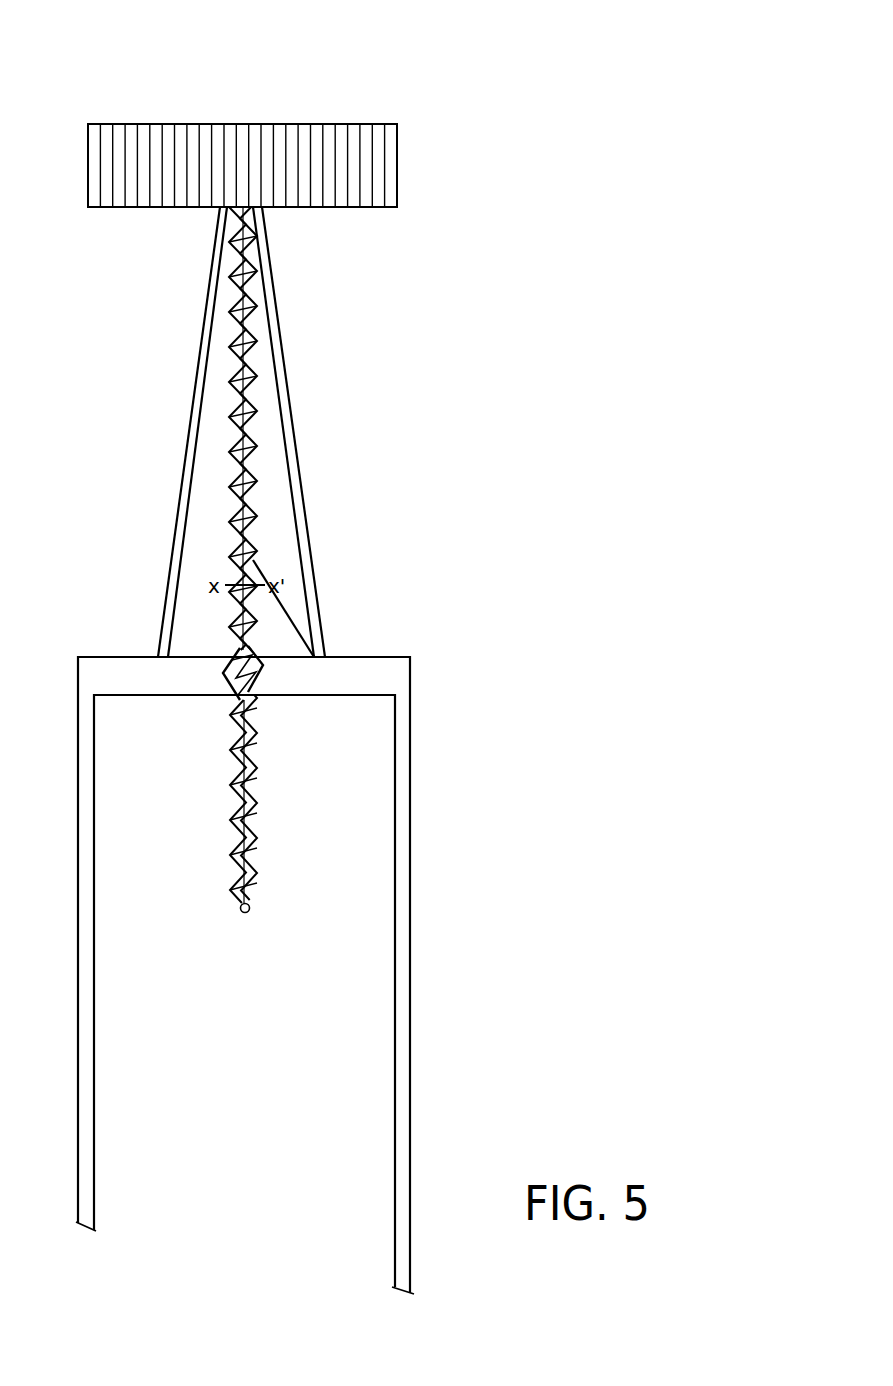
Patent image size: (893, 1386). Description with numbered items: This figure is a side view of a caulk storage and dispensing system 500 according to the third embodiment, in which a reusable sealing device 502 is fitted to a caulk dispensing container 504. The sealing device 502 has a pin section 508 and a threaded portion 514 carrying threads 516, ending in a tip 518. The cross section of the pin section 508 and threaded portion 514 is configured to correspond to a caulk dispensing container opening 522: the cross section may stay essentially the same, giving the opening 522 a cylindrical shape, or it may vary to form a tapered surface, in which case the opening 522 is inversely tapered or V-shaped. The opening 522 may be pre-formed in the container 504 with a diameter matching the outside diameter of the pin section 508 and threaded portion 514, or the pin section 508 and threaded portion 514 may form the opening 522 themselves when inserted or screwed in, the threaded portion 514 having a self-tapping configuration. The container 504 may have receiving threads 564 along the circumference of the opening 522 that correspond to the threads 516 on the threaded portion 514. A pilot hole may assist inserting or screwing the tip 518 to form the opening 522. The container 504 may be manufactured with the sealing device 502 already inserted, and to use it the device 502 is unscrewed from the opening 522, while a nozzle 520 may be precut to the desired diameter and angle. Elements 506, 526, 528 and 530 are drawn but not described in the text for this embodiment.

The caulk storage and dispensing system 500 is at (601, 17).
The reusable sealing device 502 is at (230, 432).
The caulk dispensing container 504 is at (405, 792).
The top panel 506 is at (397, 158).
The pin section 508 is at (253, 333).
The threaded portion 514 is at (240, 377).
The threads 516 is at (247, 490).
The tip 518 is at (250, 912).
The nozzle 520 is at (290, 403).
The caulk dispensing container opening 522 is at (255, 695).
The leg 526 is at (265, 285).
The leg 528 is at (315, 625).
The leg 530 is at (225, 285).
The receiving threads 564 is at (238, 660).